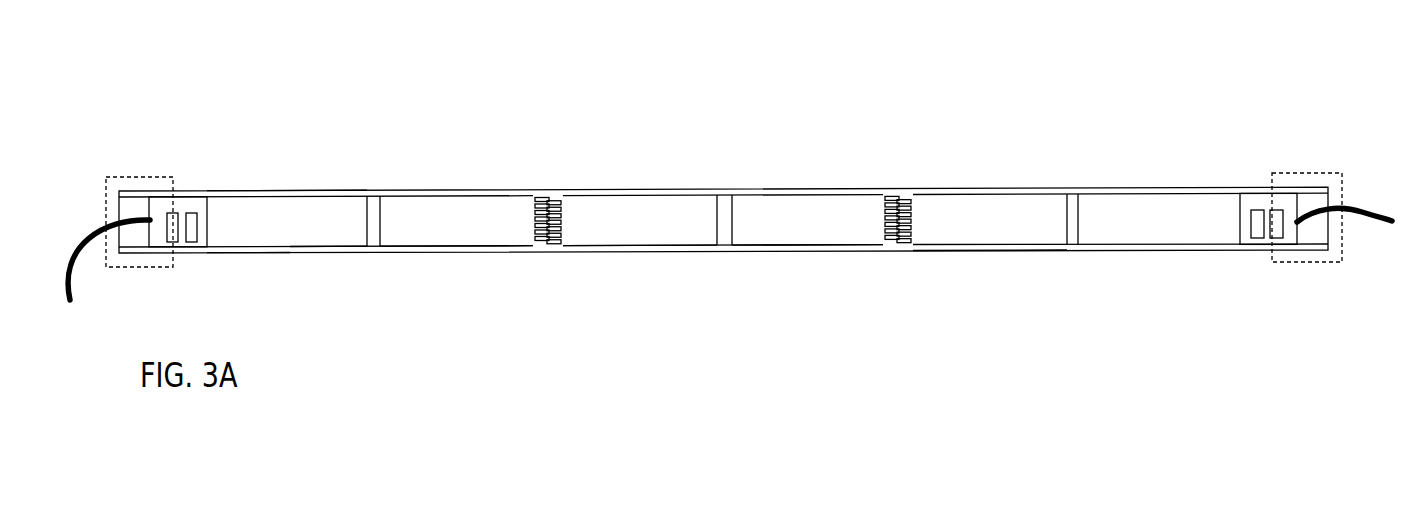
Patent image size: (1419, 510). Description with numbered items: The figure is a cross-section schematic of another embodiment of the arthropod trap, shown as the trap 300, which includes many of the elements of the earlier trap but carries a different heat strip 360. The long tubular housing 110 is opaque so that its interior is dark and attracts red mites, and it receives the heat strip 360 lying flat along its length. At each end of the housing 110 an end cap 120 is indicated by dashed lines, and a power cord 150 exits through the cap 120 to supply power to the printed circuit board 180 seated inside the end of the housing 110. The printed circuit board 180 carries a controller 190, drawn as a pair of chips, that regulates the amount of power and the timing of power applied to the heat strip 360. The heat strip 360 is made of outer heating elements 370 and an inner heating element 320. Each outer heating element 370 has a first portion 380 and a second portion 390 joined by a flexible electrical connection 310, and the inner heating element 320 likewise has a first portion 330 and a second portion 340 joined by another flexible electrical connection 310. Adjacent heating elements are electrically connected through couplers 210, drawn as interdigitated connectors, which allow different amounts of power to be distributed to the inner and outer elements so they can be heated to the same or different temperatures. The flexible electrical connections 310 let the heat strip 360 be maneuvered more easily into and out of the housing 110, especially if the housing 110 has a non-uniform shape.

The housing 110 is at (945, 188).
The end cap 120 is at (140, 178).
The power cord 150 is at (77, 287).
The printed circuit board 180 is at (183, 207).
The controller 190 is at (192, 212).
The coupler 210 is at (545, 197).
The trap 300 is at (1115, 63).
The flexible electrical connection 310 is at (370, 196).
The inner heating element 320 is at (665, 246).
The first portion of inner heating element 330 is at (578, 246).
The second portion of inner heating element 340 is at (785, 247).
The heat strip 360 is at (292, 191).
The outer heating element 370 is at (327, 246).
The first portion of outer heating element 380 is at (230, 252).
The second portion of outer heating element 390 is at (417, 246).